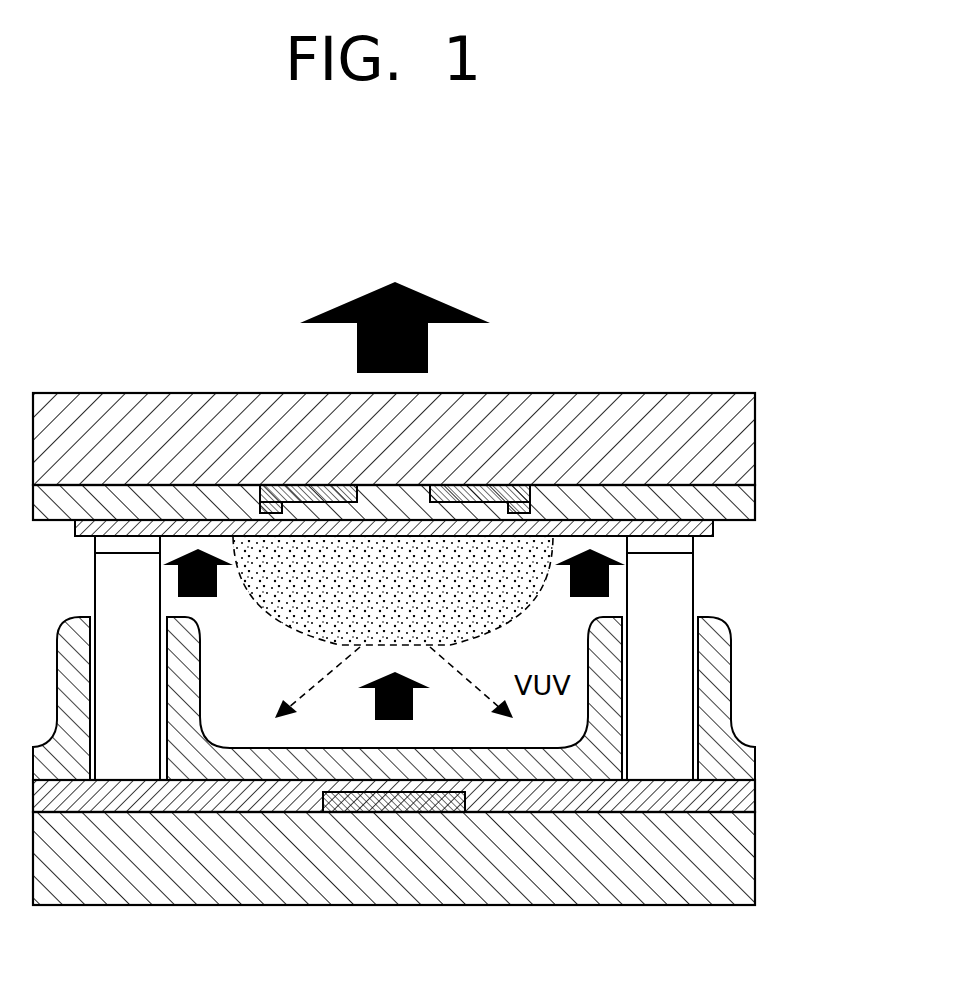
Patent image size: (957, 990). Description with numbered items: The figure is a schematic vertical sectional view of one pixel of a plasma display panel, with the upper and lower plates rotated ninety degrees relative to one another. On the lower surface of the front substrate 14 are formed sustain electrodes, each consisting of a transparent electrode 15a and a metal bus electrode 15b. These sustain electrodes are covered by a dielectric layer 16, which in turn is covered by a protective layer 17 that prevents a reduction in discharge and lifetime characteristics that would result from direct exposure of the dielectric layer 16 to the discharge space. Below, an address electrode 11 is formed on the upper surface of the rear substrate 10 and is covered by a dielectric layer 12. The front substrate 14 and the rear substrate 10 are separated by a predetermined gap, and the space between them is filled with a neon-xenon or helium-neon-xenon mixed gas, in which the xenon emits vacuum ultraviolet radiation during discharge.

The rear substrate 10 is at (728, 866).
The address electrode 11 is at (394, 800).
The dielectric layer 12 is at (728, 795).
The front substrate 14 is at (735, 411).
The transparent electrode 15a is at (307, 490).
The bus electrode 15b is at (262, 502).
The dielectric layer 16 is at (727, 505).
The protective layer 17 is at (712, 532).